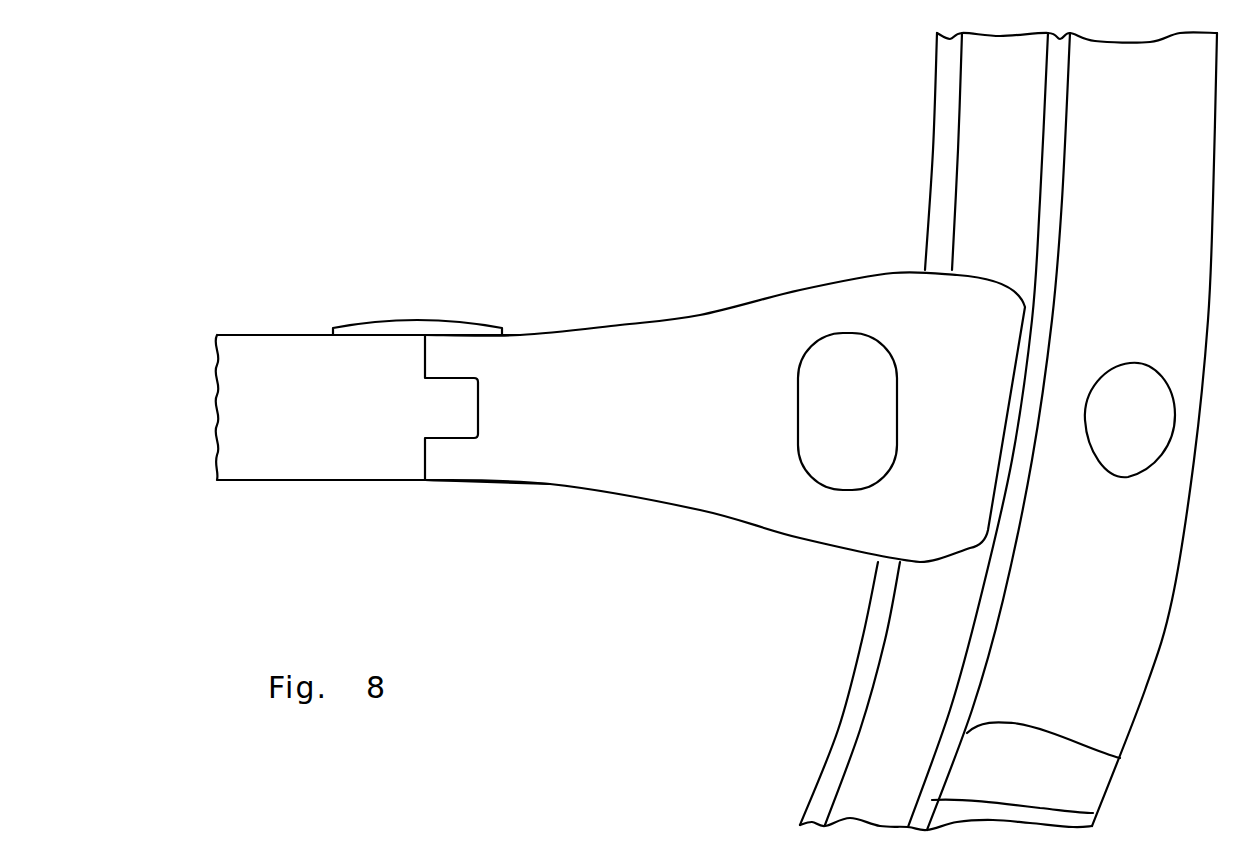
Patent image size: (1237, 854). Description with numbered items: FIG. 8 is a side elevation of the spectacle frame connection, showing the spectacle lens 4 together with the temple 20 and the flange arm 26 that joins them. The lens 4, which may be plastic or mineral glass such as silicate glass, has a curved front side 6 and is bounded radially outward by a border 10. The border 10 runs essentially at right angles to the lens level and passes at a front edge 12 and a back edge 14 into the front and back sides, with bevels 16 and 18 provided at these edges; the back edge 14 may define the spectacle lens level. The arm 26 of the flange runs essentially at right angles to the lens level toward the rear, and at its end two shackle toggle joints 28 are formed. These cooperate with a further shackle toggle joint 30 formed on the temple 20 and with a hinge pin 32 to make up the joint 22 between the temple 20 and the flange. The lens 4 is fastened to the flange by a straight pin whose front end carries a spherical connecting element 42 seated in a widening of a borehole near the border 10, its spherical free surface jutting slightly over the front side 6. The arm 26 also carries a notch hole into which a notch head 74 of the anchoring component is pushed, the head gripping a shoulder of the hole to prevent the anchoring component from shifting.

The spectacle lens 4 is at (926, 160).
The front side 6 is at (1140, 692).
The border 10 is at (873, 757).
The front edge 12 is at (1120, 758).
The back edge 14 is at (858, 640).
The bevel 16 is at (1093, 813).
The bevel 18 is at (855, 695).
The temple 20 is at (293, 452).
The joint 22 is at (415, 484).
The arm 26 is at (712, 488).
The shackle toggle joint 28 is at (472, 365).
The shackle toggle joint 30 is at (443, 418).
The hinge pin 32 is at (425, 328).
The connecting element 42 is at (1133, 452).
The notch head 74 is at (827, 362).